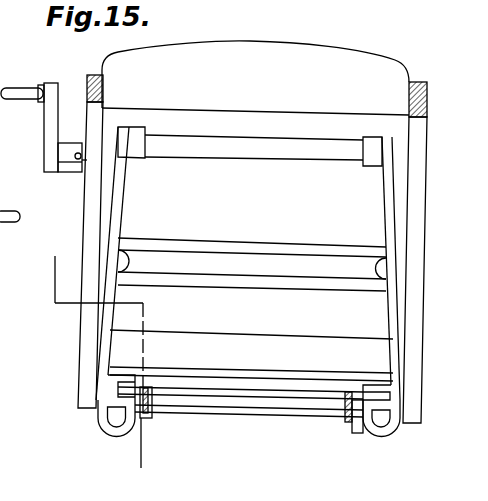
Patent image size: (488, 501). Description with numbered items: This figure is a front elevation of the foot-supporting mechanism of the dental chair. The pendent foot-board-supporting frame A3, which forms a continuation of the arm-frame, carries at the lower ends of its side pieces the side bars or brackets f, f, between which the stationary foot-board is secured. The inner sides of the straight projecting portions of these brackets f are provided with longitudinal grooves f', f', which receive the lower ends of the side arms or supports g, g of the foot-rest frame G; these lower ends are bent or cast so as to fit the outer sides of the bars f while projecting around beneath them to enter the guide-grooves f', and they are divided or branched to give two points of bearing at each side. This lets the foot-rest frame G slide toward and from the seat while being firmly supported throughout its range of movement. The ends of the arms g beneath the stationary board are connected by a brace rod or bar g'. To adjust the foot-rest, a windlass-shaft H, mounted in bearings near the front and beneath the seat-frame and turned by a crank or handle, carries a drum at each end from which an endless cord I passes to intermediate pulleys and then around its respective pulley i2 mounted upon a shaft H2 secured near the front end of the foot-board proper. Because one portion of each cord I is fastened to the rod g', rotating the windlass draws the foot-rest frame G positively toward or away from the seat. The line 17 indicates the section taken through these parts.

The pendent foot-board-supporting frame A3 is at (78, 215).
The windlass-shaft H is at (80, 153).
The foot-rest frame G is at (235, 268).
The section line 17 is at (96, 363).
The plate E is at (258, 366).
The side bar or bracket f is at (225, 395).
The longitudinal groove f' is at (223, 420).
The side arm or support g is at (230, 439).
The brace rod or bar g' is at (220, 421).
The shaft H2 is at (252, 402).
The endless cord I is at (148, 418).
The pulley i2 is at (150, 408).